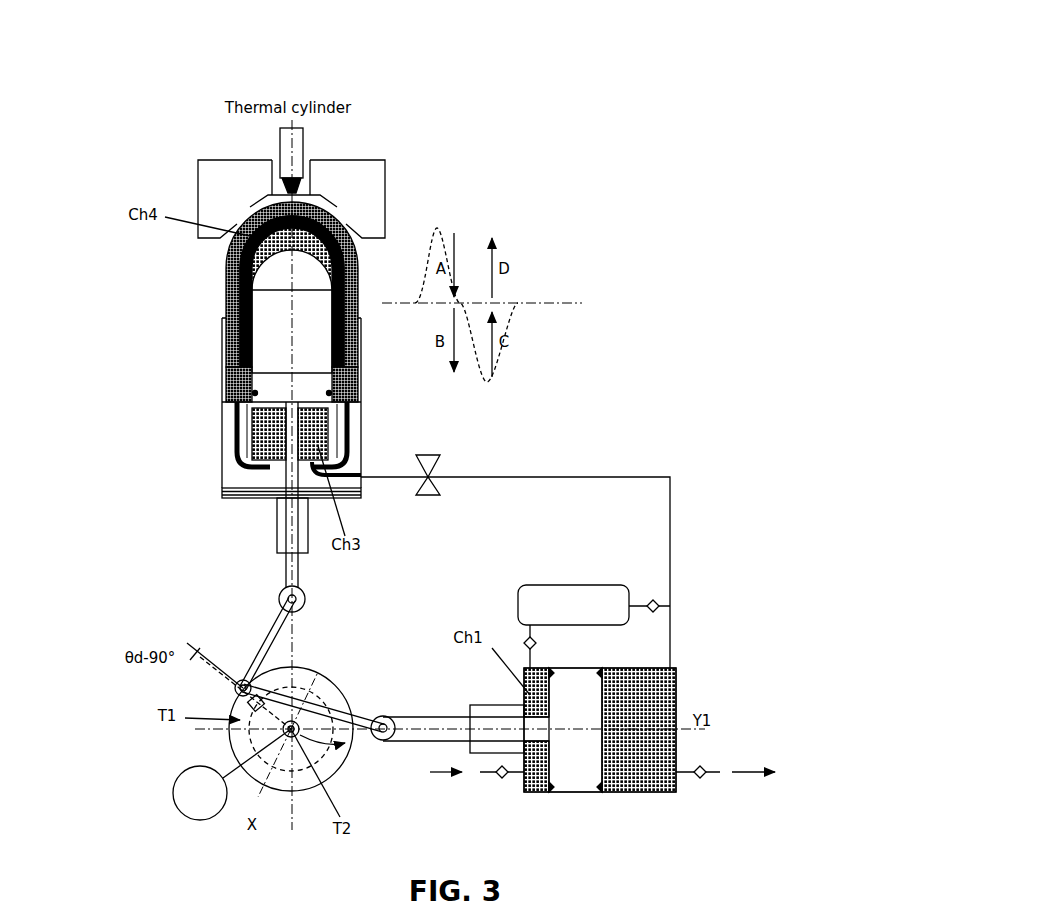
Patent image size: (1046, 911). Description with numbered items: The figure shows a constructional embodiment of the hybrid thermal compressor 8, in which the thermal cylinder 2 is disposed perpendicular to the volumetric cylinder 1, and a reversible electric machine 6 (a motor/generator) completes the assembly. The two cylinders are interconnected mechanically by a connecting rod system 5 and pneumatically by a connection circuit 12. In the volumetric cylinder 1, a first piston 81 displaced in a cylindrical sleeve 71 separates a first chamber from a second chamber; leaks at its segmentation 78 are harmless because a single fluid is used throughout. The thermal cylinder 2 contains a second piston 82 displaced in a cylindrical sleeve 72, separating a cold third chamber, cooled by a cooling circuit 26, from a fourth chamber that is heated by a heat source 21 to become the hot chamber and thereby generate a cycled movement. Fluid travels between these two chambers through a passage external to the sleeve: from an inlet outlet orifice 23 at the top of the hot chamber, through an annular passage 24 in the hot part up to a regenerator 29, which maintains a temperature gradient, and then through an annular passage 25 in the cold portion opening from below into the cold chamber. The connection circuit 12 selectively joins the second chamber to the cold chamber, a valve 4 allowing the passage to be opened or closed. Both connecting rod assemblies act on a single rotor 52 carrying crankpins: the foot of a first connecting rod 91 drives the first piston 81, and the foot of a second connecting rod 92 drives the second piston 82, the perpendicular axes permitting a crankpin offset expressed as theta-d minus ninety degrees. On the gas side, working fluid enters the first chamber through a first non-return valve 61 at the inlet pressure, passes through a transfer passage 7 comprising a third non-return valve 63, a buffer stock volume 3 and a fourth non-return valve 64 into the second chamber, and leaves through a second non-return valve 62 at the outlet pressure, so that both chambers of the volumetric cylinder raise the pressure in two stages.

The volumetric cylinder 1 is at (697, 677).
The thermal cylinder 2 is at (352, 82).
The buffer stock volume 3 is at (573, 605).
The valve 4 is at (421, 448).
The connecting rod system 5 is at (373, 572).
The reversible electric machine 6 is at (181, 817).
The transfer passage 7 is at (592, 580).
The hybrid thermal compressor 8 is at (576, 142).
The connection circuit 12 is at (494, 477).
The heat source 21 is at (288, 152).
The inlet outlet orifice 23 is at (250, 213).
The annular passage 24 is at (360, 268).
The annular passage 25 is at (241, 467).
The cooling circuit 26 is at (234, 500).
The regenerator 29 is at (238, 385).
The single rotor 52 is at (339, 680).
The first non-return valve 61 is at (477, 788).
The second non-return valve 62 is at (725, 772).
The third non-return valve 63 is at (543, 646).
The fourth non-return valve 64 is at (649, 597).
The cylindrical sleeve 71 is at (662, 793).
The cylindrical sleeve 72 is at (255, 421).
The segmentation 78 is at (556, 793).
The first piston 81 is at (575, 730).
The second piston 82 is at (292, 311).
The first connecting rod 91 is at (400, 704).
The second connecting rod 92 is at (303, 622).